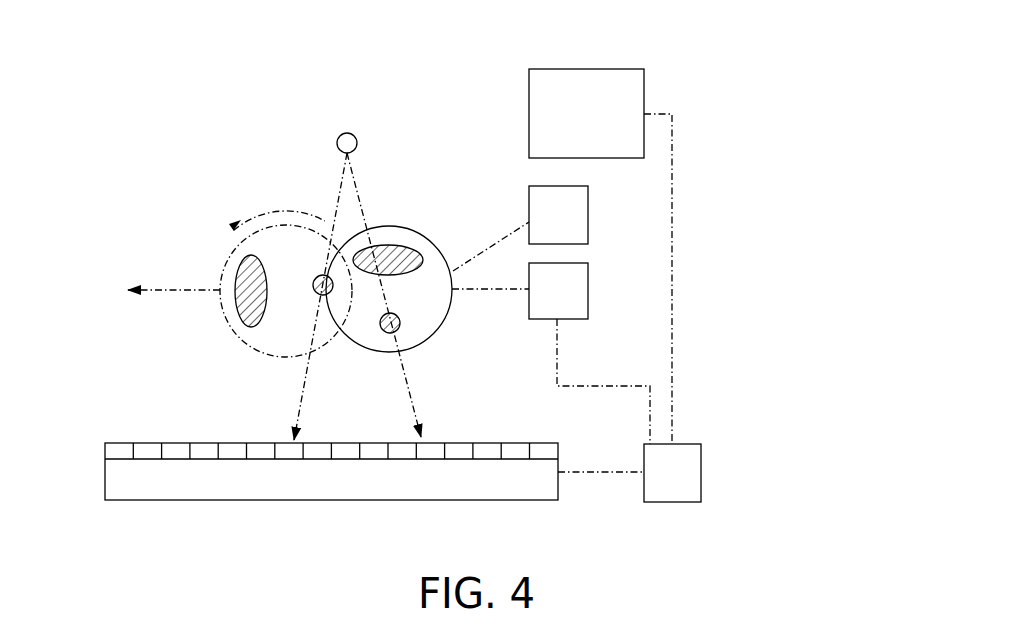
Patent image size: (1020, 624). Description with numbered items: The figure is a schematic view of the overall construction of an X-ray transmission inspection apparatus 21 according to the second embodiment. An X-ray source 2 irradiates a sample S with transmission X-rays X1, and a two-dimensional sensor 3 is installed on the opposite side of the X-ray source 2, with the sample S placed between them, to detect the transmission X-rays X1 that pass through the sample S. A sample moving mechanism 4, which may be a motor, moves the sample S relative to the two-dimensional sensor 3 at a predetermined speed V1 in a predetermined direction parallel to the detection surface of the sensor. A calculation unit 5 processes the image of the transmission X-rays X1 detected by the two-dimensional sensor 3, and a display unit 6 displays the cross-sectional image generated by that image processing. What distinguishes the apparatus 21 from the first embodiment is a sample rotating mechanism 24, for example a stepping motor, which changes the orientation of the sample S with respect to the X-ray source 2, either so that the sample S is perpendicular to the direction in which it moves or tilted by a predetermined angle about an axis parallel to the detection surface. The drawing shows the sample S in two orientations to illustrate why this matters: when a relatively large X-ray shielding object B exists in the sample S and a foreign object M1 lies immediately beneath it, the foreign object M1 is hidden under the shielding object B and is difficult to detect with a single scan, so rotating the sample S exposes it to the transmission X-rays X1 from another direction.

The X-ray source 2 is at (355, 136).
The two-dimensional sensor 3 is at (100, 478).
The sample moving mechanism 4 is at (588, 291).
The calculation unit 5 is at (686, 444).
The display unit 6 is at (621, 69).
The X-ray transmission inspection apparatus 21 is at (180, 158).
The sample rotating mechanism 24 is at (588, 208).
The X-ray shielding object B is at (226, 276).
The sample S is at (228, 250).
The foreign object M1 is at (320, 275).
The transmission X-rays X1 is at (290, 408).
The predetermined speed V1 is at (154, 290).